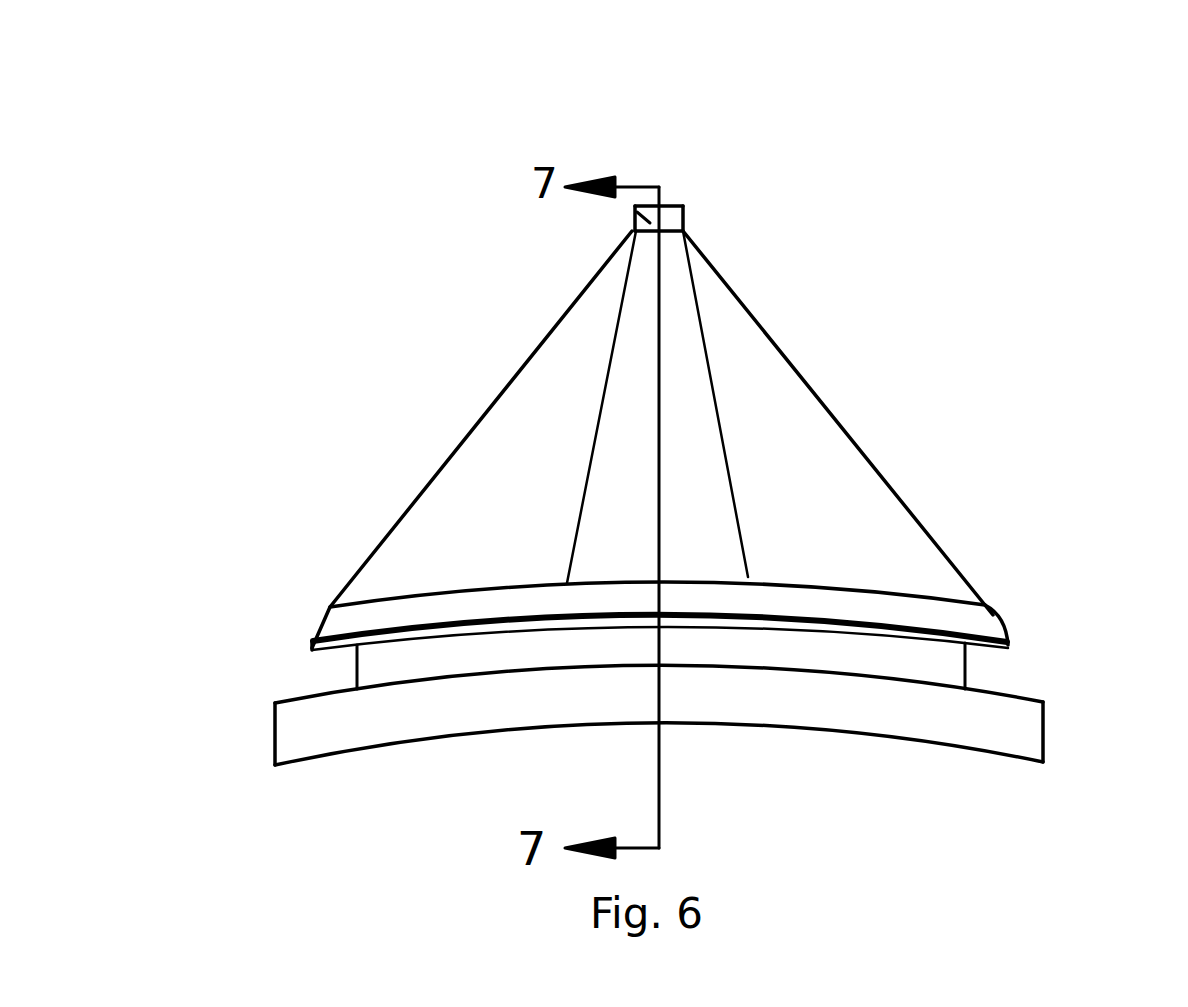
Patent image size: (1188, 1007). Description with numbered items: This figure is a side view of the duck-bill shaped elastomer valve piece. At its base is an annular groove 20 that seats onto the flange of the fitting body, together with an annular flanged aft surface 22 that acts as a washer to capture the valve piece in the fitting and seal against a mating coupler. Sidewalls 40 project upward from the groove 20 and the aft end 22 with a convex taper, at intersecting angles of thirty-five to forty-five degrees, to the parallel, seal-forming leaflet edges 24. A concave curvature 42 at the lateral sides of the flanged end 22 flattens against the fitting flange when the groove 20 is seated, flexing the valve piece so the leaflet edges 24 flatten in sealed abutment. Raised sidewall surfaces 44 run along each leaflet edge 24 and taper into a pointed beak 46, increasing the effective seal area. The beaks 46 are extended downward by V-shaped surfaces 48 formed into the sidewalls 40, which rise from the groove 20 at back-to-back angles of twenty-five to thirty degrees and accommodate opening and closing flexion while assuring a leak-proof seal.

The annular groove 20 is at (322, 677).
The aft surface 22 is at (1047, 747).
The leaflet edges 24 is at (676, 206).
The sidewalls 40 is at (503, 392).
The concave curvature 42 is at (450, 737).
The raised sidewall surfaces 44 is at (635, 217).
The beak 46 is at (637, 212).
The sidewall surfaces 48 is at (623, 515).